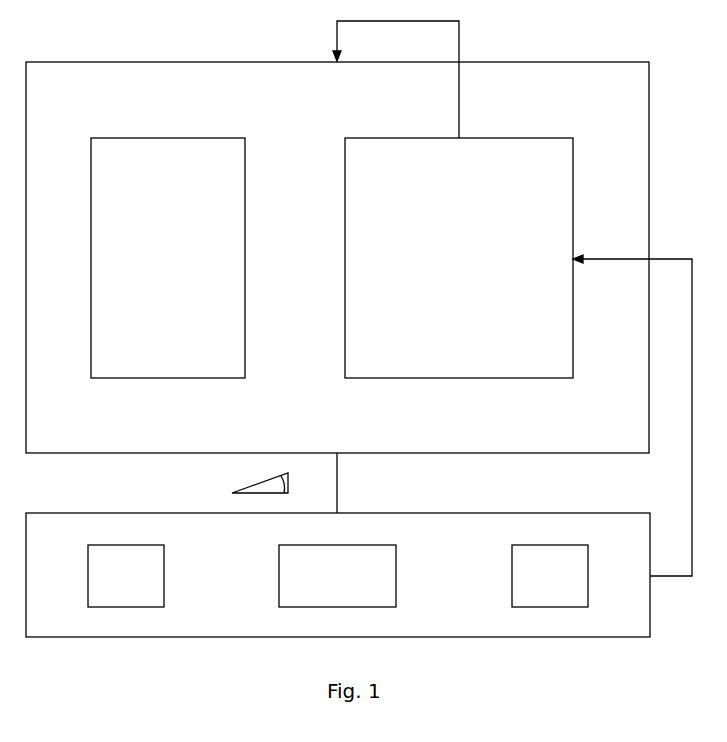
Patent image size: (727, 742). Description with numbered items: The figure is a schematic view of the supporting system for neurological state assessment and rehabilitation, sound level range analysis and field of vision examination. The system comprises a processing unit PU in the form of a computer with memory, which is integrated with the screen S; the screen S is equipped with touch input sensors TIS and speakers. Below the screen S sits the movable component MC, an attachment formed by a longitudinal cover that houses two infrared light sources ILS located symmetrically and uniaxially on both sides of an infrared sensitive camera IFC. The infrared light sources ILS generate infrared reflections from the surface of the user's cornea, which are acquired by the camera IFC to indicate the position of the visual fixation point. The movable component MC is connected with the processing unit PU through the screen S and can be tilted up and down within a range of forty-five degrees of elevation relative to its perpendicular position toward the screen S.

The screen S is at (337, 257).
The touch input sensors TIS is at (168, 258).
The processing unit PU is at (459, 258).
The movable component MC is at (338, 575).
The infrared light sources ILS is at (338, 576).
The infrared sensitive camera IFC is at (337, 576).